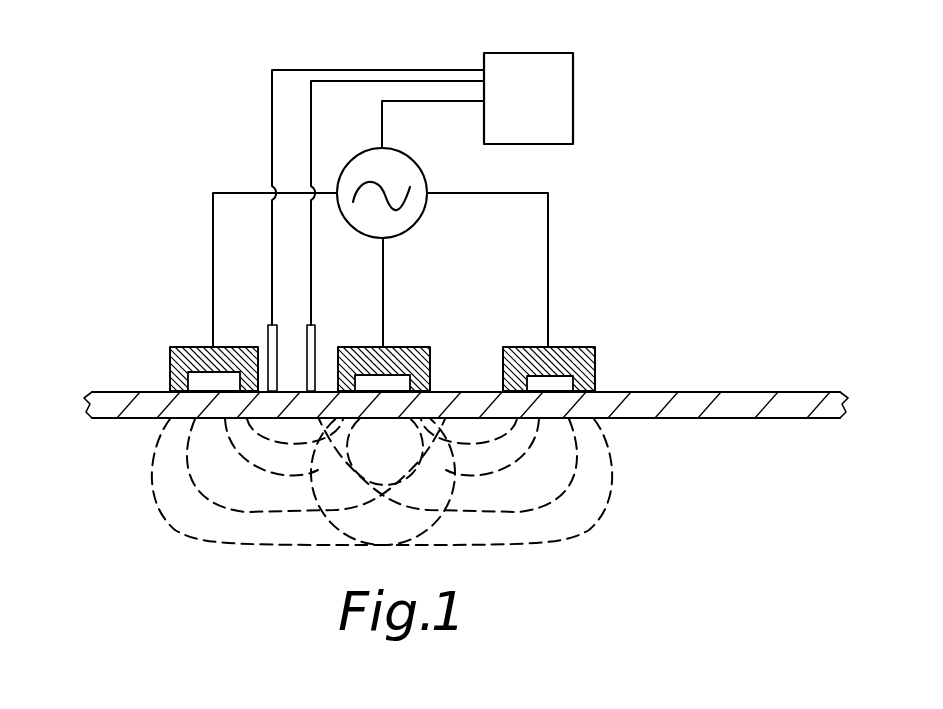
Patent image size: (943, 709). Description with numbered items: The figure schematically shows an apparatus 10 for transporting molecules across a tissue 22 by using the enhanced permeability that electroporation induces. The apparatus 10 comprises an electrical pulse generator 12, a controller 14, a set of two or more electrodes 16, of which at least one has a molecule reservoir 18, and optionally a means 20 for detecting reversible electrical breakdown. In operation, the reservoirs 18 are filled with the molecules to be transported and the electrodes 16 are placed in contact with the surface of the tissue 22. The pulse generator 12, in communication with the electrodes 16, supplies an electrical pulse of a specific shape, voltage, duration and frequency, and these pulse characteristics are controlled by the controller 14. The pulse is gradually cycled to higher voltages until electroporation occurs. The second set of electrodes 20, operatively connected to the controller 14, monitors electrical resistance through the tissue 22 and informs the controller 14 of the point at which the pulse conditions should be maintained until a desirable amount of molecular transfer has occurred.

The apparatus 10 is at (640, 115).
The electrical pulse generator 12 is at (413, 162).
The controller 14 is at (533, 53).
The electrodes 16 is at (185, 347).
The molecule reservoir 18 is at (198, 385).
The means for detecting REB 20 is at (307, 338).
The tissue 22 is at (735, 402).